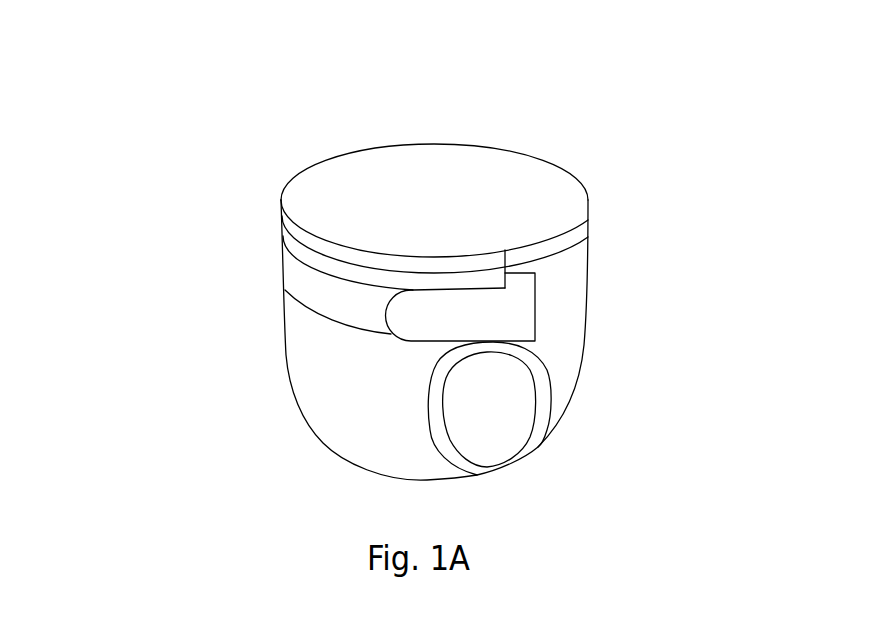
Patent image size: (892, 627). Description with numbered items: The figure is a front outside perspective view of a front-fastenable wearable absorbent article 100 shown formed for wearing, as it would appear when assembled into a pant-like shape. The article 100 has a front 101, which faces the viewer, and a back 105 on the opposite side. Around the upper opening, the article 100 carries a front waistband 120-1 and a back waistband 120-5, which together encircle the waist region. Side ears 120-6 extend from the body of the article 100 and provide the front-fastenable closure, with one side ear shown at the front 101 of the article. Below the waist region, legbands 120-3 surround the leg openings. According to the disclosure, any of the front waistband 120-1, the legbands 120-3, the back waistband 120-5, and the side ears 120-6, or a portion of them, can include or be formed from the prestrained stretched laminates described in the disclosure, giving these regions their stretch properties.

The front-fastenable wearable absorbent article 100 is at (273, 110).
The front 101 is at (285, 389).
The back 105 is at (600, 333).
The front waistband 120-1 is at (280, 214).
The back waistband 120-5 is at (590, 218).
The side ears 120-6 is at (493, 327).
The legbands 120-3 is at (540, 445).